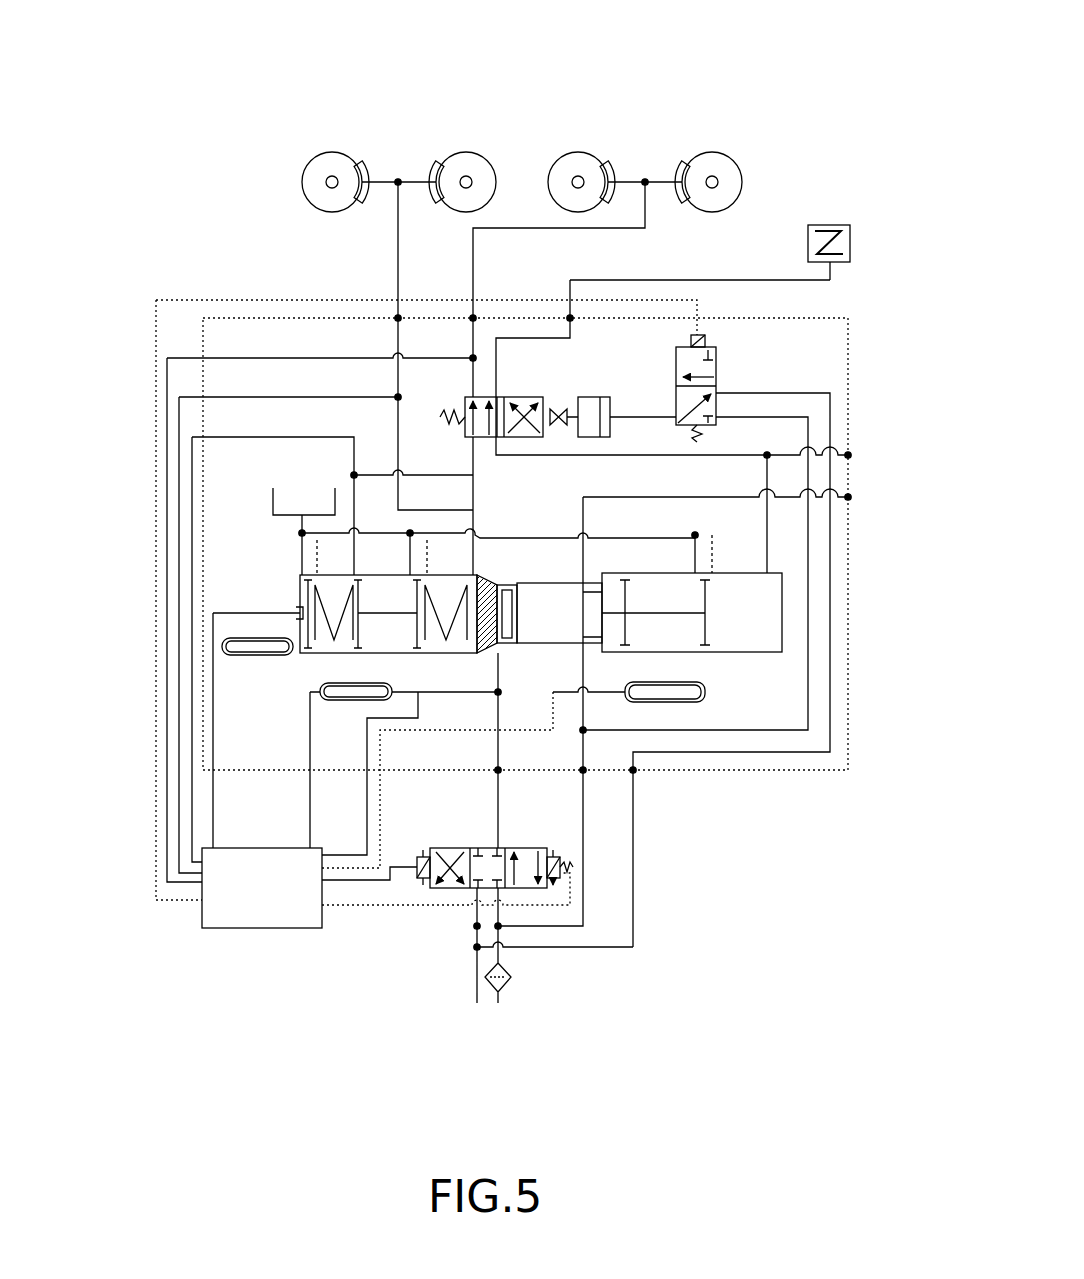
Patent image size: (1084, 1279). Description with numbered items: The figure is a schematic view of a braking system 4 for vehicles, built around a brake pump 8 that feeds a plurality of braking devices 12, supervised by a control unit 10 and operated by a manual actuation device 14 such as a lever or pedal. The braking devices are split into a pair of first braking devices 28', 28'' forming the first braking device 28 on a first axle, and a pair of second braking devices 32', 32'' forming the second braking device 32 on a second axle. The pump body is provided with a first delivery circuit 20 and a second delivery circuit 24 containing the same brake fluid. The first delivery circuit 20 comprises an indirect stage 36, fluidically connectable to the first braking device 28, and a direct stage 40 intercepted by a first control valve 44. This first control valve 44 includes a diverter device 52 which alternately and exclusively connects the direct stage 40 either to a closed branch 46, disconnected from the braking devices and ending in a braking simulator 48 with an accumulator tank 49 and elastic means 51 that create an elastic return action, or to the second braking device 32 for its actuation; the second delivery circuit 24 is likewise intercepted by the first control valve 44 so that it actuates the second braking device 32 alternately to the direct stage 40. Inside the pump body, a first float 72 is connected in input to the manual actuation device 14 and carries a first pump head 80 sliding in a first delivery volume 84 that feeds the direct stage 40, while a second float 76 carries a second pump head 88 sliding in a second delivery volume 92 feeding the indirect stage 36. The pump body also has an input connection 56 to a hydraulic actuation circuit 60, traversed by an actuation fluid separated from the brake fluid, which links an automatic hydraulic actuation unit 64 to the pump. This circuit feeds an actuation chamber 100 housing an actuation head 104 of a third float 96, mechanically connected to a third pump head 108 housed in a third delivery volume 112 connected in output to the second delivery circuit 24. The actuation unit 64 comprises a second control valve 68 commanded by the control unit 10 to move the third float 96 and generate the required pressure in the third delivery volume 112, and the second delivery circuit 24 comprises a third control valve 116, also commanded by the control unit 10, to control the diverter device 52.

The braking system 4 is at (95, 130).
The brake pump 8 is at (838, 617).
The control unit 10 is at (258, 912).
The braking devices 12 is at (382, 113).
The manual actuation device 14 is at (275, 673).
The first delivery circuit 20 is at (440, 500).
The second delivery circuit 24 is at (782, 651).
The first braking device 28 is at (382, 132).
The first braking device 28' is at (309, 144).
The first braking device 28'' is at (471, 132).
The second braking device 32 is at (664, 200).
The second braking device 32' is at (588, 135).
The second braking device 32'' is at (767, 154).
The indirect stage 36 is at (383, 527).
The direct stage 40 is at (340, 483).
The first control valve 44 is at (595, 404).
The closed branch 46 is at (790, 281).
The braking simulator 48 is at (878, 224).
The accumulator tank 49 is at (846, 240).
The elastic means 51 is at (835, 226).
The diverter device 52 is at (530, 392).
The input connection 56 is at (502, 660).
The hydraulic actuation circuit 60 is at (527, 806).
The automatic hydraulic actuation unit 64 is at (640, 963).
The second control valve 68 is at (442, 892).
The first float 72 is at (171, 655).
The second float 76 is at (262, 721).
The first pump head 80 is at (300, 625).
The first delivery volume 84 is at (415, 635).
The second pump head 88 is at (262, 721).
The second delivery volume 92 is at (458, 645).
The third float 96 is at (637, 671).
The actuation chamber 100 is at (567, 650).
The actuation head 104 is at (507, 585).
The third pump head 108 is at (707, 630).
The third delivery volume 112 is at (760, 632).
The third control valve 116 is at (718, 372).